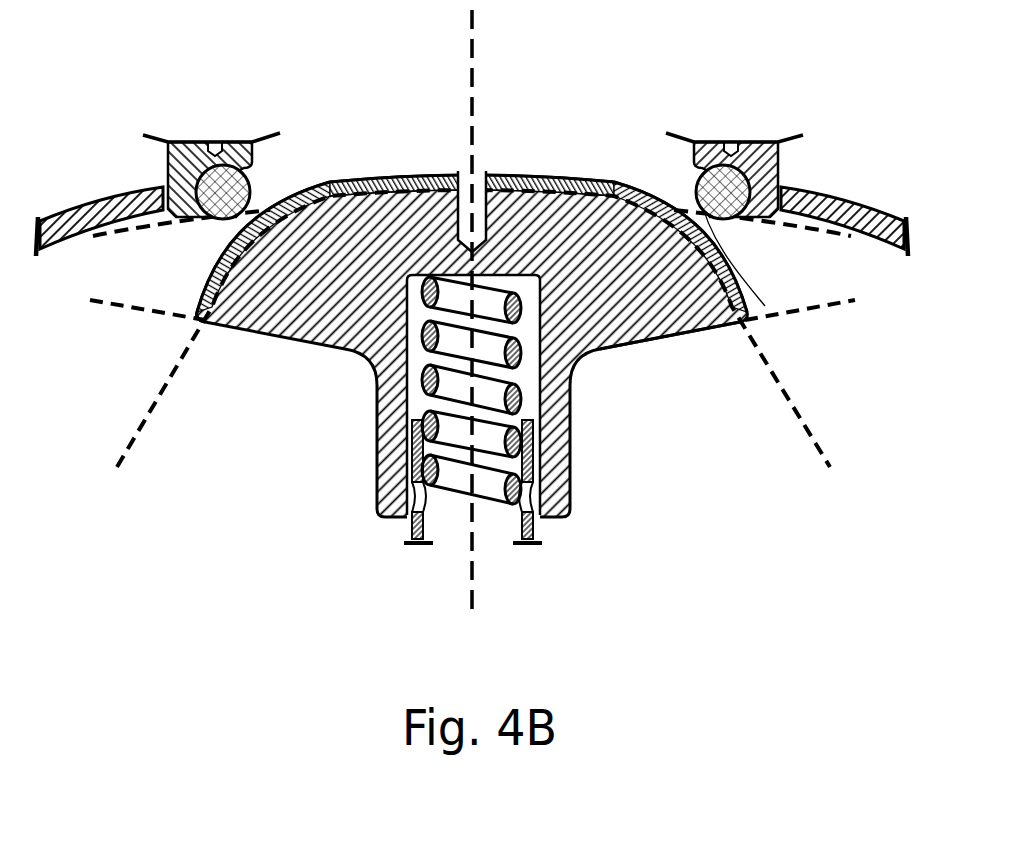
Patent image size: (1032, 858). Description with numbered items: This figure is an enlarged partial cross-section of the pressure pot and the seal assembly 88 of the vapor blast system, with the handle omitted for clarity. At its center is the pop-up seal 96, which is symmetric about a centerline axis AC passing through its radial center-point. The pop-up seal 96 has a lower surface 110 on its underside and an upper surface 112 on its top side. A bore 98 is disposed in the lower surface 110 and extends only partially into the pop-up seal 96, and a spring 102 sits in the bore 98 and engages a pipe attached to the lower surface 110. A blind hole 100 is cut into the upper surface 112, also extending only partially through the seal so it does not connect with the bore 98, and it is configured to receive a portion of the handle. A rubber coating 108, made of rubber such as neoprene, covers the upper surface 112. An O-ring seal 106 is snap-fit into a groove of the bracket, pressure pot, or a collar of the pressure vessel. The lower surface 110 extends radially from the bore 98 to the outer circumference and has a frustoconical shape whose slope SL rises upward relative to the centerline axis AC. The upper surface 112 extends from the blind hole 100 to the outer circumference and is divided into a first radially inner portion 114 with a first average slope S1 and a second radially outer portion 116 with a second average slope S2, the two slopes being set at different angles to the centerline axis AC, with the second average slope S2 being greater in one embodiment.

The seal assembly 88 is at (276, 503).
The pop-up seal 96 is at (664, 334).
The bore 98 is at (542, 370).
The blind hole 100 is at (464, 176).
The spring 102 is at (423, 382).
The O-ring seal 106 is at (254, 182).
The rubber coating 108 is at (512, 176).
The lower surface 110 is at (264, 332).
The upper surface 112 is at (372, 182).
The first radially inner portion 114 is at (668, 176).
The second radially outer portion 116 is at (728, 212).
The centerline axis AC is at (469, 44).
The first average slope S1 is at (161, 230).
The slope SL is at (123, 308).
The second average slope S2 is at (146, 422).